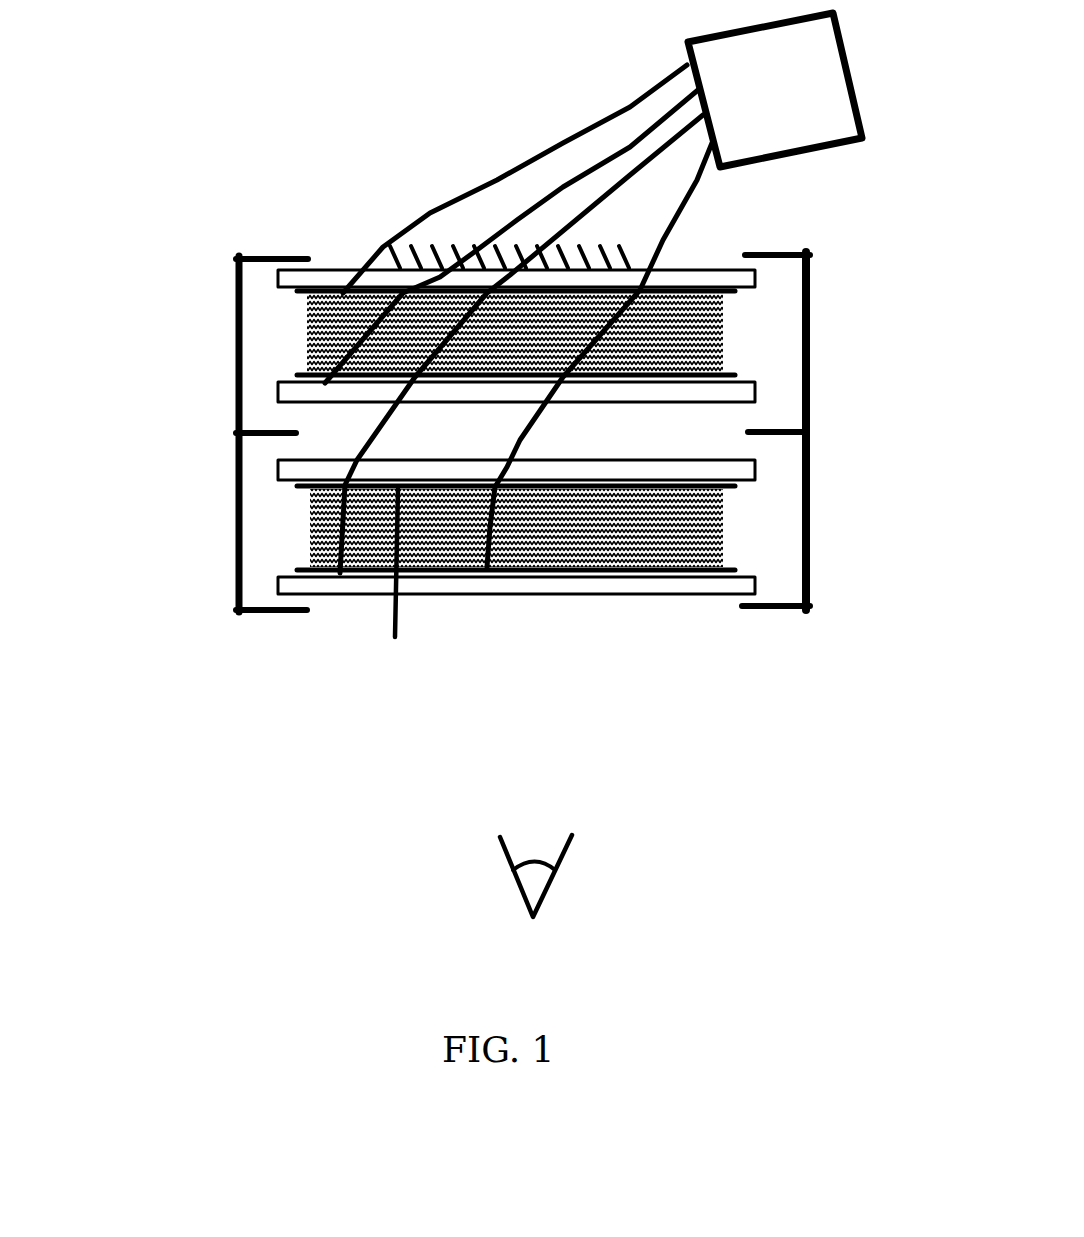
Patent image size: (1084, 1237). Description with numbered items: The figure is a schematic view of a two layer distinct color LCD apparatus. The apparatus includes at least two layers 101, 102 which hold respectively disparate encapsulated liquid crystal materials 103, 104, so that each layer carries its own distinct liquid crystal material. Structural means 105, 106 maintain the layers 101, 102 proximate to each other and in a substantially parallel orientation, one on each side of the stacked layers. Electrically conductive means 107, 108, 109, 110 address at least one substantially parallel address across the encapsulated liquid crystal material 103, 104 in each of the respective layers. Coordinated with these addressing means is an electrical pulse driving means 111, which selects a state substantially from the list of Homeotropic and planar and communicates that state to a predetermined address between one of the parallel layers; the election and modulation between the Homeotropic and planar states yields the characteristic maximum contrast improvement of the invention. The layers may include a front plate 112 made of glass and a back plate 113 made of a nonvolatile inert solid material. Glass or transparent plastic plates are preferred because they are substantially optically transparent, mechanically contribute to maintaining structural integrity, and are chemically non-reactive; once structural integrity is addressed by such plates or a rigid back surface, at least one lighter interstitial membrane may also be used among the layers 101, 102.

The first layer 101 is at (505, 327).
The second layer 102 is at (490, 577).
The first encapsulated liquid crystal material 103 is at (723, 335).
The second encapsulated liquid crystal material 104 is at (727, 515).
The structural means 105 is at (257, 618).
The structural means 106 is at (782, 610).
The electrically conductive means 107 is at (690, 292).
The electrically conductive means 108 is at (600, 387).
The electrically conductive means 109 is at (395, 637).
The electrically conductive means 110 is at (340, 573).
The electrical pulse driving means 111 is at (828, 88).
The front plate 112 is at (628, 588).
The back plate 113 is at (707, 270).